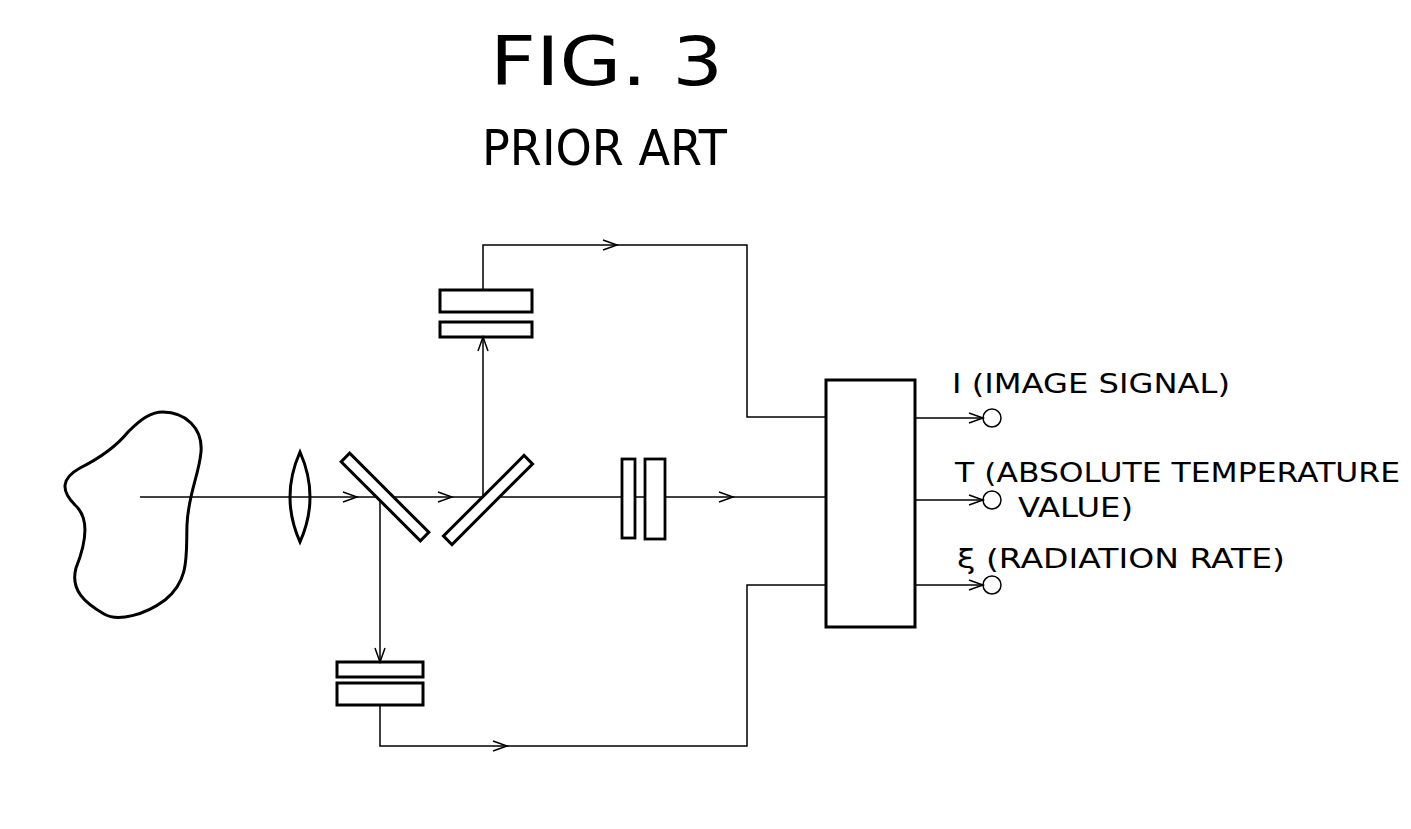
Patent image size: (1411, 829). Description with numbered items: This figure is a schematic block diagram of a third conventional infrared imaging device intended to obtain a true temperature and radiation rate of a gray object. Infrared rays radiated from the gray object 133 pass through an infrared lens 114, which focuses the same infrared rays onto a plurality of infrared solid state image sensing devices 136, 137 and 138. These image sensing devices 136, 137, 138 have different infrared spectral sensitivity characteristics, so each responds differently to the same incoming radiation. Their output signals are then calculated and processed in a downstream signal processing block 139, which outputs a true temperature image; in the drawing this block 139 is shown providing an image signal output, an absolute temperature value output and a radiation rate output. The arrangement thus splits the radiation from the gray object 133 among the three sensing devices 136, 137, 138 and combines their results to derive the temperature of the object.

The gray object 133 is at (117, 443).
The infrared lens 114 is at (298, 452).
The infrared solid state image sensing device 137 is at (440, 298).
The infrared solid state image sensing device 136 is at (337, 695).
The infrared solid state image sensing device 138 is at (654, 459).
The signal processing unit 139 is at (868, 380).